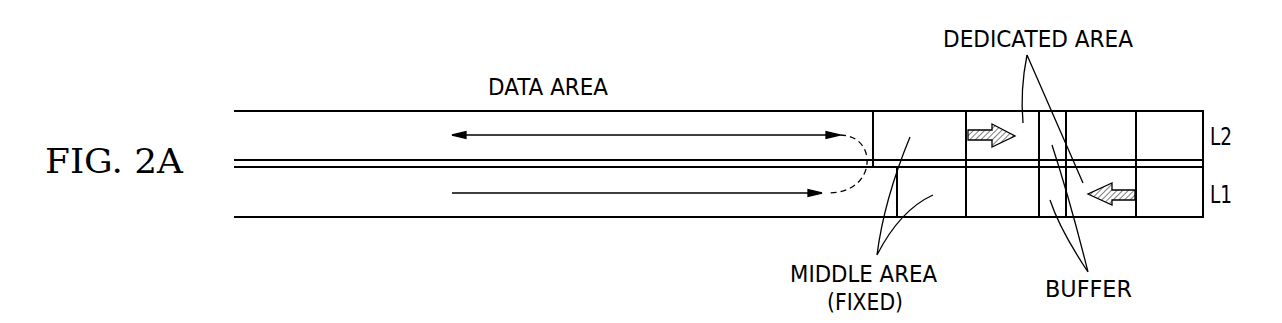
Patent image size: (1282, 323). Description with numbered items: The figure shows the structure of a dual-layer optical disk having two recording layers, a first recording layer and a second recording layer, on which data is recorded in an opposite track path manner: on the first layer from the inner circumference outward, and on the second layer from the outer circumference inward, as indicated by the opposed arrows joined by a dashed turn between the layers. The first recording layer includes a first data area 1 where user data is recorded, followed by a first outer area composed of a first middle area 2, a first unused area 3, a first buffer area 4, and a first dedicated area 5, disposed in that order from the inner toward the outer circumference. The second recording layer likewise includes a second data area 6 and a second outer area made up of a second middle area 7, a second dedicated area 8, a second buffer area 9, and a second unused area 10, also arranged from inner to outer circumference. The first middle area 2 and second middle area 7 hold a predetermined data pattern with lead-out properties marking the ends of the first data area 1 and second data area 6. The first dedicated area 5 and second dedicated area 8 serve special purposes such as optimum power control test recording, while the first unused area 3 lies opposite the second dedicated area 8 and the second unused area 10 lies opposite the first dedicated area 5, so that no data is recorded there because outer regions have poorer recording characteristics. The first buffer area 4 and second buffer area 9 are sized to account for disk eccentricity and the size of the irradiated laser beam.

The first data area 1 is at (708, 205).
The first middle area 2 is at (953, 200).
The first unused area 3 is at (1004, 200).
The first buffer area 4 is at (1046, 202).
The first dedicated area 5 is at (1114, 207).
The second data area 6 is at (703, 125).
The second middle area 7 is at (900, 118).
The second dedicated area 8 is at (976, 118).
The second buffer area 9 is at (1060, 120).
The second unused area 10 is at (1100, 125).